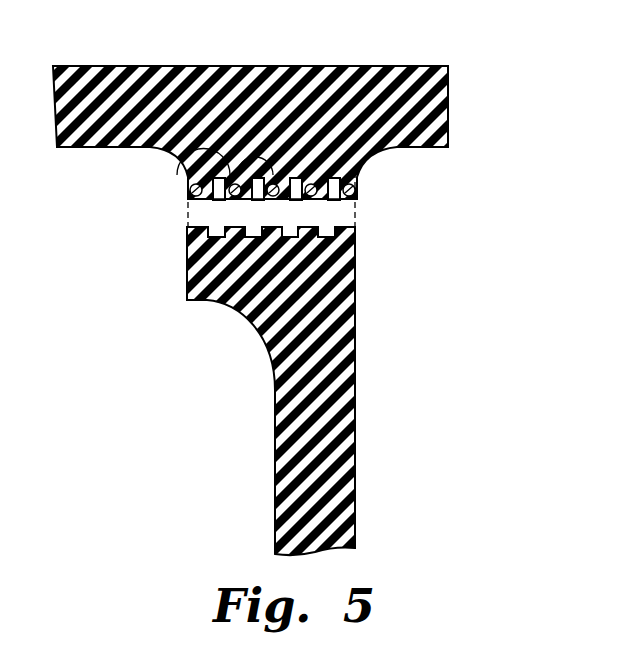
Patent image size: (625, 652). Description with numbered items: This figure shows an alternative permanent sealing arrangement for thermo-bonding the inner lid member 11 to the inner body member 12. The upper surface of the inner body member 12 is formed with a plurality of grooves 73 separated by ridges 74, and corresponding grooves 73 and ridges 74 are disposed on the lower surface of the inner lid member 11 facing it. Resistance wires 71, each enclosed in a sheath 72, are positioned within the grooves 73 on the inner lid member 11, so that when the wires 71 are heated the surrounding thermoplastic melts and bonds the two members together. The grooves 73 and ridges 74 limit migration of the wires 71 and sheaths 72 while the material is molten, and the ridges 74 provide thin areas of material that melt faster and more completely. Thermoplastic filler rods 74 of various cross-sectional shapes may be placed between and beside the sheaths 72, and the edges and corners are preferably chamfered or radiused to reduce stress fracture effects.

The inner lid member 11 is at (390, 66).
The inner body member 12 is at (358, 426).
The resistance wires 71 is at (215, 199).
The sheaths 72 is at (333, 205).
The grooves 73 is at (293, 248).
The ridges 74 is at (236, 232).